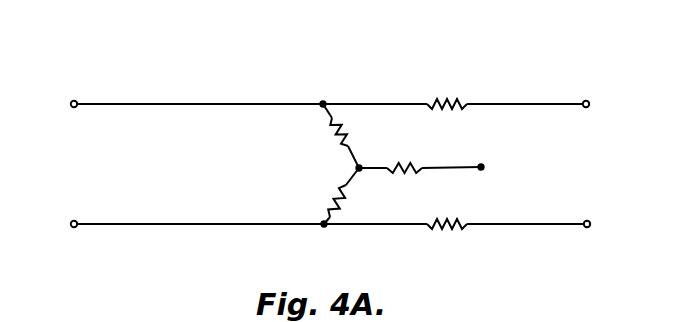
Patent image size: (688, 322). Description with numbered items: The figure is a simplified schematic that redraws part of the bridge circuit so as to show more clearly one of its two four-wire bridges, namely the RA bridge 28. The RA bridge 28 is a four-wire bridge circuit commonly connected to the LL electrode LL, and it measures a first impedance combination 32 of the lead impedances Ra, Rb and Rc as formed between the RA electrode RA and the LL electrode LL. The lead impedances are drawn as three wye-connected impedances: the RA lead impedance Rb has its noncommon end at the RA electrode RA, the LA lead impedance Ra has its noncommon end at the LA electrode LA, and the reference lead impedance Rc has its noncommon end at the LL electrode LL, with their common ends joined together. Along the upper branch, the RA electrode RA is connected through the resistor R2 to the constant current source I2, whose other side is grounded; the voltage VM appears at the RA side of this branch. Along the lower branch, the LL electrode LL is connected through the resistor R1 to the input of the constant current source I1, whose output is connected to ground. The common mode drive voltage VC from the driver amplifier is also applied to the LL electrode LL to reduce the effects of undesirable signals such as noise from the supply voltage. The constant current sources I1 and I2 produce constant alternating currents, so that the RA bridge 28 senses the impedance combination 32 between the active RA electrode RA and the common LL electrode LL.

The RA bridge 28 is at (388, 58).
The first impedance combination 32 is at (273, 176).
The resistor R1 is at (447, 212).
The resistor R2 is at (447, 93).
The LA lead impedance Ra is at (420, 185).
The RA lead impedance Rb is at (350, 136).
The reference lead impedance Rc is at (325, 196).
The RA electrode RA is at (328, 94).
The LL electrode LL is at (327, 236).
The LA electrode LA is at (493, 161).
The VM voltage VM is at (52, 95).
The common mode drive voltage VC is at (52, 218).
The constant current source I1 is at (609, 228).
The constant current source I2 is at (602, 111).